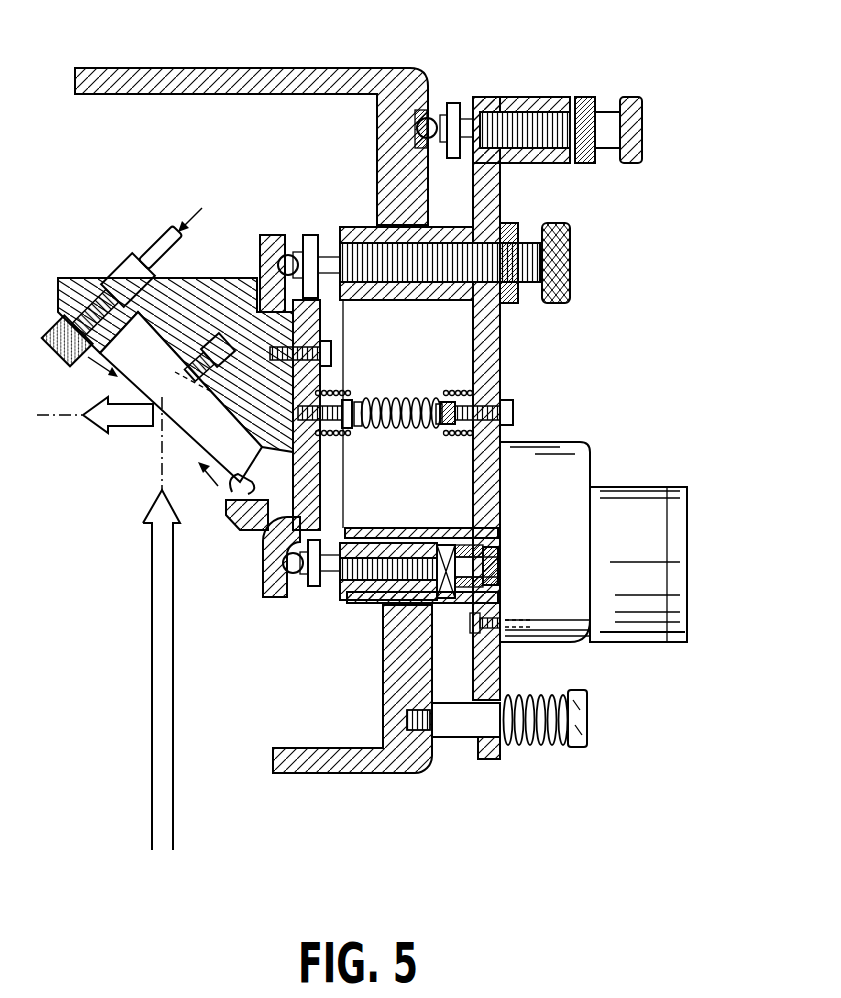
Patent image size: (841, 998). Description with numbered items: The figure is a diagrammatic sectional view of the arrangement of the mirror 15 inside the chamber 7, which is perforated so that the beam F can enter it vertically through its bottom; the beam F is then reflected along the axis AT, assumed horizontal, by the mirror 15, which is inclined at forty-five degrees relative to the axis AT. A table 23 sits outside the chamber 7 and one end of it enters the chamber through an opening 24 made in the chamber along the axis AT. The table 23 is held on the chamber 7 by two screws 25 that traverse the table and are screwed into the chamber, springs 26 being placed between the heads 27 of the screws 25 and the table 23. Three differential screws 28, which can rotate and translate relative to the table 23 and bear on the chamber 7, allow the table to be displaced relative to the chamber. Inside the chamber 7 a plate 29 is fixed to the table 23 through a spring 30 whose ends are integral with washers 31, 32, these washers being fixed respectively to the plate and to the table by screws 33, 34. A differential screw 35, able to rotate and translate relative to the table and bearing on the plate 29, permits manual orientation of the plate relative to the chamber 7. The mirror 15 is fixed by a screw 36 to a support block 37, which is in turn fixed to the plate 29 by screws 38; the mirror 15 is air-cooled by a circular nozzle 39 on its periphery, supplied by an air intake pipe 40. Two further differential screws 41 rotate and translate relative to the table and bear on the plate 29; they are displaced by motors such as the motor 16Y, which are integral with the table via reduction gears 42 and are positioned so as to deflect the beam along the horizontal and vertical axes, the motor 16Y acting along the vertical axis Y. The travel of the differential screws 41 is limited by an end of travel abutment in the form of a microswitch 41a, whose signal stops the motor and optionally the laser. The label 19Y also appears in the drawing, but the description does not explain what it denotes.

The chamber 7 is at (120, 78).
The differential screws 28 is at (538, 98).
The air intake pipe 40 is at (150, 258).
The support block 37 is at (235, 292).
The circular nozzle 39 is at (50, 312).
The screw 36 is at (190, 358).
The differential screw 35 is at (572, 270).
The table 23 is at (500, 335).
The screws 38 is at (343, 332).
The washer 31 is at (335, 390).
The spring 30 is at (410, 395).
The washer 32 is at (478, 395).
The reduction gears 42 is at (560, 462).
The motor 16Y is at (632, 523).
The screw 33 is at (360, 440).
The screw 34 is at (440, 440).
The microswitch 41a is at (443, 545).
The mirror 15 is at (187, 470).
The plate 29 is at (267, 540).
The differential screws 41 is at (330, 603).
The opening 24 is at (377, 605).
The screws 25 is at (460, 723).
The springs 26 is at (540, 745).
The heads 27 is at (580, 748).
The member 19Y is at (680, 645).
The axis AT is at (60, 418).
The axis Y is at (163, 457).
The beam F is at (160, 778).